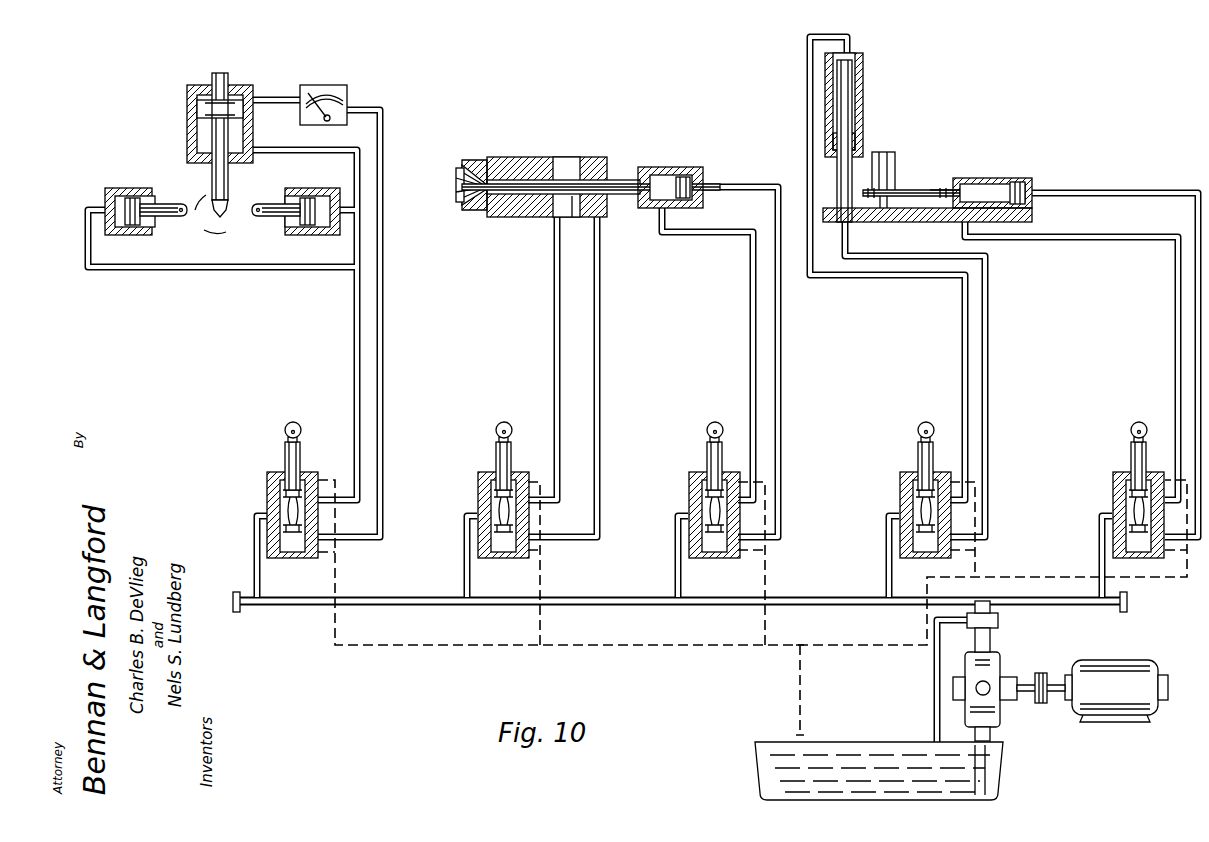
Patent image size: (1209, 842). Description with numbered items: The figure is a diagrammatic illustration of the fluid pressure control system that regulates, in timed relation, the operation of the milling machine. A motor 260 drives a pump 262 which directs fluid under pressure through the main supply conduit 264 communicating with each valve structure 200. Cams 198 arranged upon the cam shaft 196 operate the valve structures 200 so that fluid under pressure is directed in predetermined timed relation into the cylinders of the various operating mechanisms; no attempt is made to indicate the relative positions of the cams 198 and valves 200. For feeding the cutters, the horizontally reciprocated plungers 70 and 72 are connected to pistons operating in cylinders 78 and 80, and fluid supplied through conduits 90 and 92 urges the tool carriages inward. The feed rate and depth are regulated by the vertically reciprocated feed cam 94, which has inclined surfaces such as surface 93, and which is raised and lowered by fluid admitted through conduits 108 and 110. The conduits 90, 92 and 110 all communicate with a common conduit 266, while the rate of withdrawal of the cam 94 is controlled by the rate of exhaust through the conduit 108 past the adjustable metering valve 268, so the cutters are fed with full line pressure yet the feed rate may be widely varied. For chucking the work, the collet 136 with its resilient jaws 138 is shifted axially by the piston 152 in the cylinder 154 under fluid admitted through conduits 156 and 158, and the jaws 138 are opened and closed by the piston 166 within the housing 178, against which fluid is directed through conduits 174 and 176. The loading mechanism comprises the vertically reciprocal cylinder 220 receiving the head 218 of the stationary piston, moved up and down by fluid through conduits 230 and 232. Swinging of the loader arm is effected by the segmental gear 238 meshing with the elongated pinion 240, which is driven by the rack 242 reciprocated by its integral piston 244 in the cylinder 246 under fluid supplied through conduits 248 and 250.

The feed cam 94 is at (232, 84).
The conduit 108 is at (280, 85).
The adjustable metering valve 268 is at (340, 92).
The conduit 110 is at (280, 150).
The cylinder 78 is at (115, 186).
The inclined surface 93 is at (206, 195).
The conduit 92 is at (226, 205).
The cylinder 80 is at (323, 186).
The plunger 72 is at (170, 216).
The plunger 70 is at (272, 218).
The conduit 90 is at (105, 275).
The common conduit 266 is at (380, 325).
The resilient jaws 138 is at (452, 200).
The collet 136 is at (478, 212).
The cylinder 154 is at (548, 158).
The conduit 156 is at (556, 250).
The piston 152 is at (576, 218).
The conduit 158 is at (603, 278).
The housing 178 is at (645, 165).
The piston 166 is at (683, 176).
The conduit 174 is at (652, 222).
The conduit 176 is at (744, 180).
The conduit 232 is at (808, 55).
The cylinder 220 is at (862, 72).
The head 218 is at (855, 132).
The segmental gear 238 is at (890, 152).
The elongated pinion 240 is at (900, 188).
The rack 242 is at (932, 188).
The cylinder 246 is at (990, 177).
The piston 244 is at (1020, 182).
The conduit 250 is at (1066, 190).
The conduit 230 is at (850, 246).
The conduit 248 is at (1090, 228).
The cams 198 is at (288, 422).
The cam shaft 196 is at (301, 440).
The valve structure 200 is at (265, 486).
The main supply conduit 264 is at (598, 595).
The pump 262 is at (1000, 668).
The motor 260 is at (1118, 668).